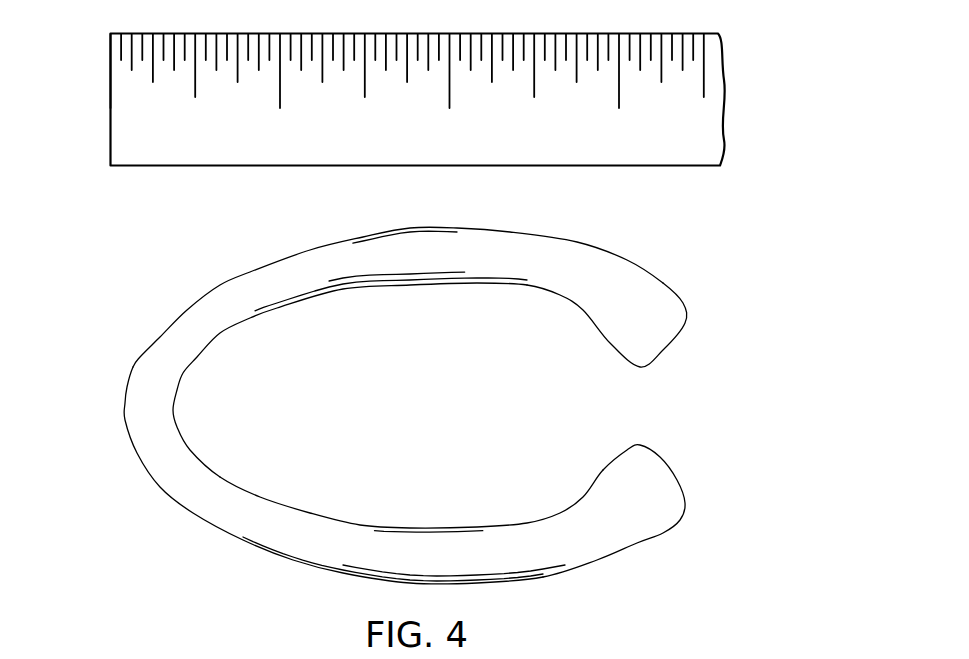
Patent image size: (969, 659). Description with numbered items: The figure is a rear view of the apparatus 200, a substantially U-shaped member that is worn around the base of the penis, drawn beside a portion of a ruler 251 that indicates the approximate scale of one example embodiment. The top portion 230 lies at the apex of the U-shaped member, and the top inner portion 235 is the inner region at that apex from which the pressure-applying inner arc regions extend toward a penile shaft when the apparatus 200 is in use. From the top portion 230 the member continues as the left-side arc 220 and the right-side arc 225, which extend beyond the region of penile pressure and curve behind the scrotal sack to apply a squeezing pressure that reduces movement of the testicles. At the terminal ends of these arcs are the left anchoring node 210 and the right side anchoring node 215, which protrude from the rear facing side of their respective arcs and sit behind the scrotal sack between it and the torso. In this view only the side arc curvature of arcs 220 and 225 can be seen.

The apparatus 200 is at (399, 382).
The left anchoring node 210 is at (643, 505).
The right side anchoring node 215 is at (640, 307).
The left-side arc 220 is at (380, 545).
The right-side arc 225 is at (367, 253).
The top portion 230 is at (133, 366).
The top inner portion 235 is at (190, 405).
The ruler 251 is at (693, 107).